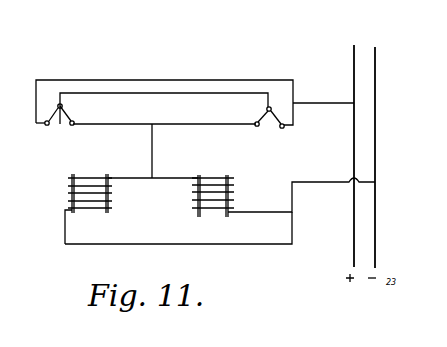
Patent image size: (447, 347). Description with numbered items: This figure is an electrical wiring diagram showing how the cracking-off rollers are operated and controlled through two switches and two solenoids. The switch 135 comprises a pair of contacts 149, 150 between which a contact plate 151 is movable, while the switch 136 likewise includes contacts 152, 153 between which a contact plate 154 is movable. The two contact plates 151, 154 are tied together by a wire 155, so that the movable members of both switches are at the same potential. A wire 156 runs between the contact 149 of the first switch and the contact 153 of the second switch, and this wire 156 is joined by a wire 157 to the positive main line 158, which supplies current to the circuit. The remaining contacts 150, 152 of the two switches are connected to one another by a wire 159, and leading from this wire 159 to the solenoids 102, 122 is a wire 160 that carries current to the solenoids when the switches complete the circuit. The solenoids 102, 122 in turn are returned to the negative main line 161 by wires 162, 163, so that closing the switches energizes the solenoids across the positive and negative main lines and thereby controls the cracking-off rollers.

The solenoid 102 is at (201, 210).
The solenoid 122 is at (100, 214).
The switch 135 is at (270, 124).
The switch 136 is at (60, 121).
The contact 149 is at (290, 128).
The contact 150 is at (255, 126).
The contact plate 151 is at (256, 106).
The contact 152 is at (79, 112).
The contact 153 is at (33, 132).
The contact plate 154 is at (79, 101).
The wire 155 is at (153, 94).
The wire 156 is at (146, 80).
The wire 157 is at (313, 102).
The positive main line 158 is at (355, 49).
The wire 159 is at (139, 126).
The wire 160 is at (152, 161).
The negative main line 161 is at (376, 117).
The wire 162 is at (264, 212).
The wire 163 is at (239, 238).